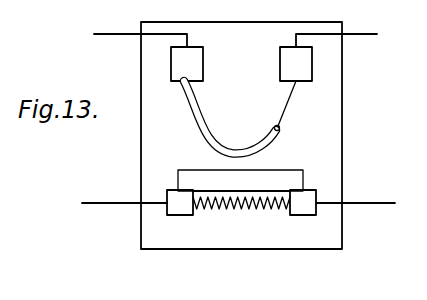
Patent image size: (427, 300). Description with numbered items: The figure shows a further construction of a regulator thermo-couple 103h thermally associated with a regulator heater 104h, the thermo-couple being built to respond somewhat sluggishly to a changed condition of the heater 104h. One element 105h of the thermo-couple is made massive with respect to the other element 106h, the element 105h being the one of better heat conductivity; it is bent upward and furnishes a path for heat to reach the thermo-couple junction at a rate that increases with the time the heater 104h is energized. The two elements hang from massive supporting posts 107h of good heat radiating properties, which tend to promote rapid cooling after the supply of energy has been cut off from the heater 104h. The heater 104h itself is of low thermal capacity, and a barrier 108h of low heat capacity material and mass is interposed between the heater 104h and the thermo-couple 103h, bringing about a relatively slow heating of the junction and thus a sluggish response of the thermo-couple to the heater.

The thermo-couple 103h is at (304, 111).
The heater 104h is at (250, 224).
The element of the thermo-couple 105h is at (192, 113).
The other element of the thermo-couple 106h is at (277, 125).
The supporting posts 107h is at (285, 73).
The barrier 108h is at (283, 180).